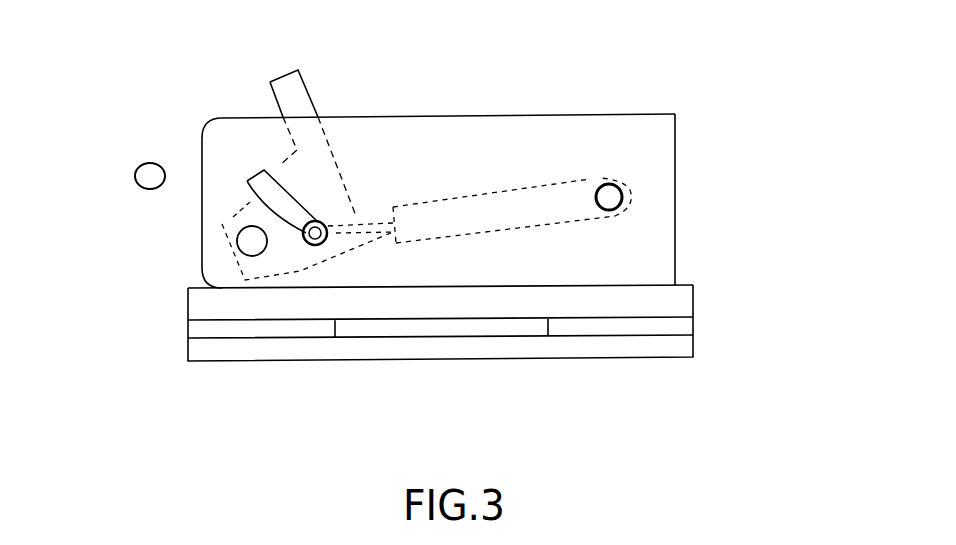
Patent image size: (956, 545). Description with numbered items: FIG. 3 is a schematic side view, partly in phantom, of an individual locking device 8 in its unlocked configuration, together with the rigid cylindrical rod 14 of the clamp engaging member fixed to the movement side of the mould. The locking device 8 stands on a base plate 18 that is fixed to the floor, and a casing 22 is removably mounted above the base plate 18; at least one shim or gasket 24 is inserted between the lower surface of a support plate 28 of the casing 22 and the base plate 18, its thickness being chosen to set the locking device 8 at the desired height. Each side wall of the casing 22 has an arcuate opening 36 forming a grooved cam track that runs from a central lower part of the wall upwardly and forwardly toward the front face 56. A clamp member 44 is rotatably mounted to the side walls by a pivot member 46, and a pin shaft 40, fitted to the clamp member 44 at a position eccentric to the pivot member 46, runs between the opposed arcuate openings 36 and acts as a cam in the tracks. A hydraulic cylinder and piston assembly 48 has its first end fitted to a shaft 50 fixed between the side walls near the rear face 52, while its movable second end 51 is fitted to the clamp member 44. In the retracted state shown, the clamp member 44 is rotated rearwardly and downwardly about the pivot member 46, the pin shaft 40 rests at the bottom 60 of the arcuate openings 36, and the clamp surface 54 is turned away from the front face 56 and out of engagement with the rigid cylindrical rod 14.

The locking device 8 is at (645, 120).
The rigid cylindrical rod 14 is at (137, 186).
The base plate 18 is at (675, 350).
The casing 22 is at (458, 133).
The shim or gasket 24 is at (682, 321).
The support plate 28 is at (685, 298).
The arcuate opening 36 is at (252, 167).
The pin shaft 40 is at (316, 245).
The clamp member 44 is at (306, 87).
The pivot member 46 is at (243, 238).
The hydraulic cylinder and piston assembly 48 is at (547, 189).
The shaft 50 is at (624, 189).
The second end 51 is at (292, 237).
The rear face 52 is at (675, 203).
The clamp surface 54 is at (278, 102).
The front face 56 is at (203, 210).
The bottom of the arcuate openings 60 is at (324, 238).